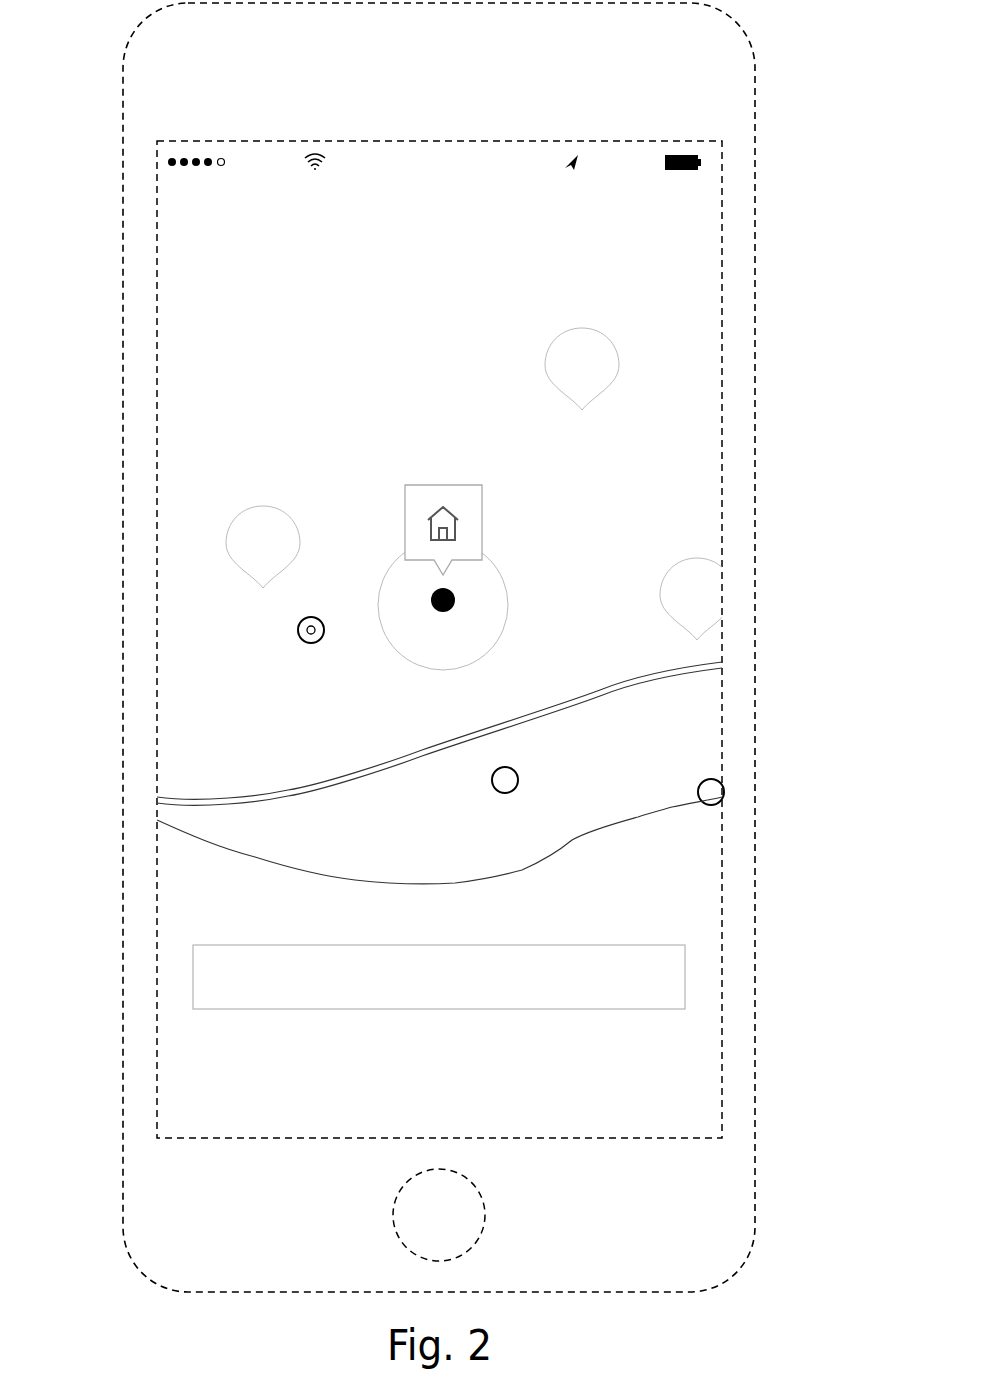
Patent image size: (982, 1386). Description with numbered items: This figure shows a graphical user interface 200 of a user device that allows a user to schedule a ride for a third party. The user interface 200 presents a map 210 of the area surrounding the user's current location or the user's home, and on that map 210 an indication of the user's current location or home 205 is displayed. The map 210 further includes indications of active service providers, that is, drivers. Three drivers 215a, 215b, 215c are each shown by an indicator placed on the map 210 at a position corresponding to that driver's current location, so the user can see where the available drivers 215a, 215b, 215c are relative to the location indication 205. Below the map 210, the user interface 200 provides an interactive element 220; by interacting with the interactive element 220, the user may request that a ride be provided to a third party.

The graphical user interface 200 is at (482, 647).
The indication of the user's current location or the user's home 205 is at (455, 594).
The map 210 is at (228, 392).
The driver 215a is at (632, 351).
The driver 215b is at (225, 533).
The driver 215c is at (703, 547).
The interactive element 220 is at (665, 977).